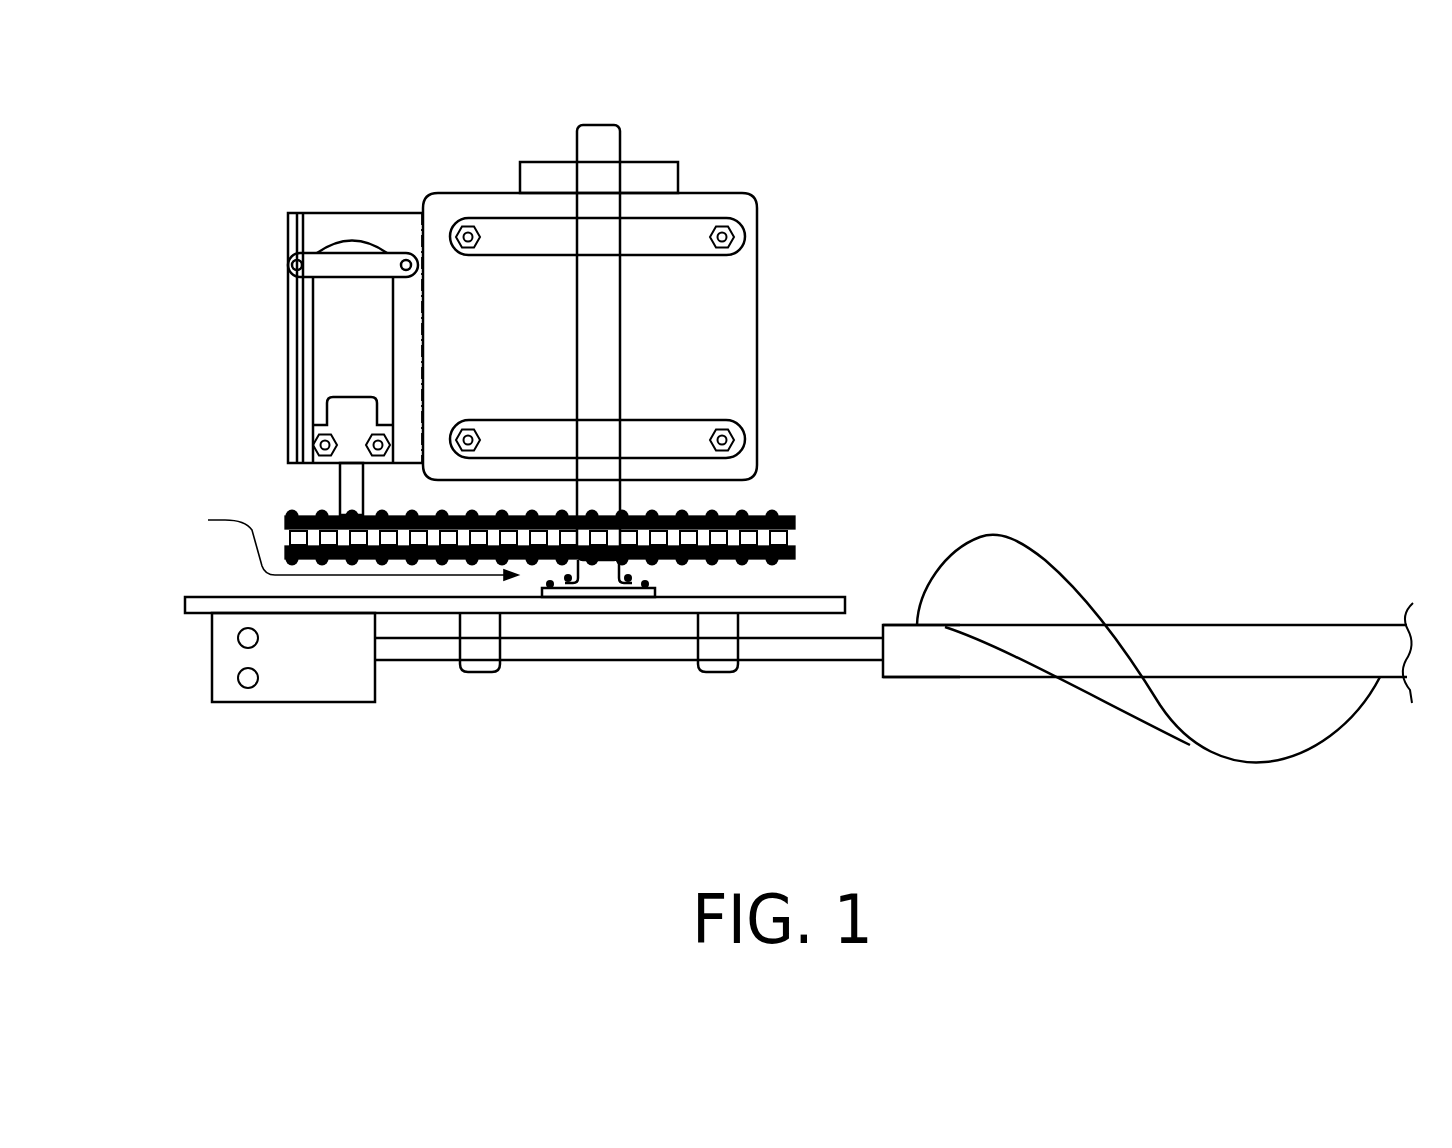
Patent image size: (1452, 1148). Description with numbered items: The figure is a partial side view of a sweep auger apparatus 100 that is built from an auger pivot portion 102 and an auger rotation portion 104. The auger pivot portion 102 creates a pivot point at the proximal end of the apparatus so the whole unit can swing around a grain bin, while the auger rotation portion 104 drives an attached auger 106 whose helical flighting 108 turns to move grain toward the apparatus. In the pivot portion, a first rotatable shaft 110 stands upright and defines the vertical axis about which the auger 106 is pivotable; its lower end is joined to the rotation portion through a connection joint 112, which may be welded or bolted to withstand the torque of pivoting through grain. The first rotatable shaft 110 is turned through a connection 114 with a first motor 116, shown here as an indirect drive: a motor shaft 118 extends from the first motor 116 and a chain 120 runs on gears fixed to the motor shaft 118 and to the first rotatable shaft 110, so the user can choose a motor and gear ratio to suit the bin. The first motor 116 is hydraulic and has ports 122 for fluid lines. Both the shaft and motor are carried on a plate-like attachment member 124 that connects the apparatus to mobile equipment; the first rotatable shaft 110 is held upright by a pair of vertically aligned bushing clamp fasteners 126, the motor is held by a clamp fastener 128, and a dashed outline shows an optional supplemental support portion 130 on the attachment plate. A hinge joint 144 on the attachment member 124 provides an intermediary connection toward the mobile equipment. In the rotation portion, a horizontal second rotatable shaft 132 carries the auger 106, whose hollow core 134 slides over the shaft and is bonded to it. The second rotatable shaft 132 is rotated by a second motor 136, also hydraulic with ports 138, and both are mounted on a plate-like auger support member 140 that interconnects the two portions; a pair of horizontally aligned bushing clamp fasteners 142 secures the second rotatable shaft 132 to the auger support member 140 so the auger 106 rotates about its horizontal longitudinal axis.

The sweep auger apparatus 100 is at (1226, 198).
The auger pivot portion 102 is at (876, 276).
The auger rotation portion 104 is at (464, 792).
The auger 106 is at (1097, 549).
The helical flighting 108 is at (1118, 712).
The first rotatable shaft 110 is at (620, 143).
The connection joint 112 is at (341, 544).
The connection 114 is at (313, 347).
The first motor 116 is at (797, 490).
The motor shaft 118 is at (340, 497).
The chain 120 is at (797, 533).
The ports 122 is at (378, 445).
The attachment member 124 is at (757, 213).
The fasteners 126 is at (745, 237).
The fastener 128 is at (288, 258).
The supplemental support portion 130 is at (375, 212).
The second rotatable shaft 132 is at (417, 662).
The hollow core 134 is at (918, 677).
The second motor 136 is at (348, 702).
The ports 138 is at (240, 673).
The auger support member 140 is at (845, 597).
The fasteners 142 is at (480, 672).
The hinge joint 144 is at (678, 176).